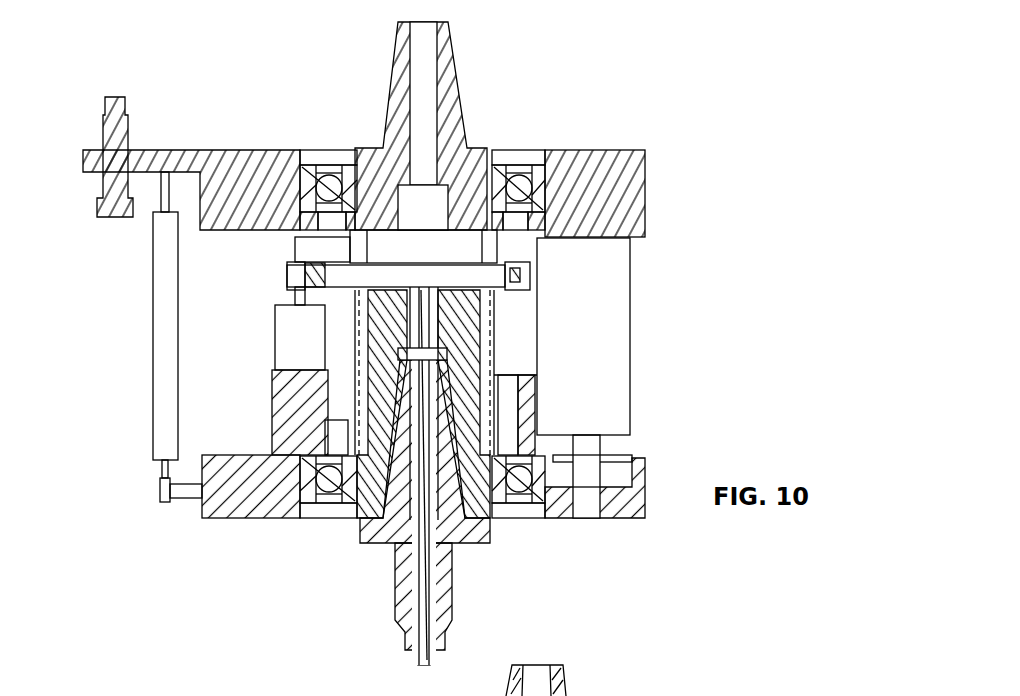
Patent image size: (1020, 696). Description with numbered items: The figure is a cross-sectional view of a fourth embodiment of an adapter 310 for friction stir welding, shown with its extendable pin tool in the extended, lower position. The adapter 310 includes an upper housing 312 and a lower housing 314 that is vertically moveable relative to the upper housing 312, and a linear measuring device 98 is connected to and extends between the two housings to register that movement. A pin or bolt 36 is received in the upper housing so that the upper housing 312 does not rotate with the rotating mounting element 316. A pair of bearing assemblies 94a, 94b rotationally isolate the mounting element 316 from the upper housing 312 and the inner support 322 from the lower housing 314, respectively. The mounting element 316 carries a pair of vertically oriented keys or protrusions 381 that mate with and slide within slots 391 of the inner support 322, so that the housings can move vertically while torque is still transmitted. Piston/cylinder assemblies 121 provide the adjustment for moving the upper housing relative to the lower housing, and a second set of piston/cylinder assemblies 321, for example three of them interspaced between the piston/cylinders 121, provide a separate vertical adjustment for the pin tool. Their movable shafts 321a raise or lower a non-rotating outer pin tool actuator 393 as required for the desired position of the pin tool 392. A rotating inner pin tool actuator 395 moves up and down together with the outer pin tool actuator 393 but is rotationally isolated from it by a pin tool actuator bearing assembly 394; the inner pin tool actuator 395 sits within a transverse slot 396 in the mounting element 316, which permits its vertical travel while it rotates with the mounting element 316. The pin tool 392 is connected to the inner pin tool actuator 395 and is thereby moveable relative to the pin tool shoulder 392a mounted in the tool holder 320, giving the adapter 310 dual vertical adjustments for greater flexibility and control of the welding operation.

The adapter 310 is at (651, 52).
The upper housing 312 is at (686, 161).
The lower housing 314 is at (194, 545).
The mounting element 316 is at (440, 65).
The tool holder 320 is at (464, 527).
The piston/cylinder assemblies 321 is at (270, 400).
The movable shafts 321a is at (290, 323).
The inner support 322 is at (350, 520).
The pin or bolt 36 is at (122, 135).
The bearing assembly 94a is at (522, 176).
The bearing assembly 94b is at (325, 505).
The linear measuring device 98 is at (163, 327).
The piston/cylinder assemblies 121 is at (312, 252).
The keys or protrusions 381 is at (357, 362).
The slots 391 is at (360, 392).
The pin tool 392 is at (426, 655).
The pin tool shoulder 392a is at (447, 634).
The outer pin tool actuator 393 is at (525, 285).
The pin tool actuator bearing assembly 394 is at (512, 264).
The inner pin tool actuator 395 is at (447, 263).
The transverse slot 396 is at (362, 262).